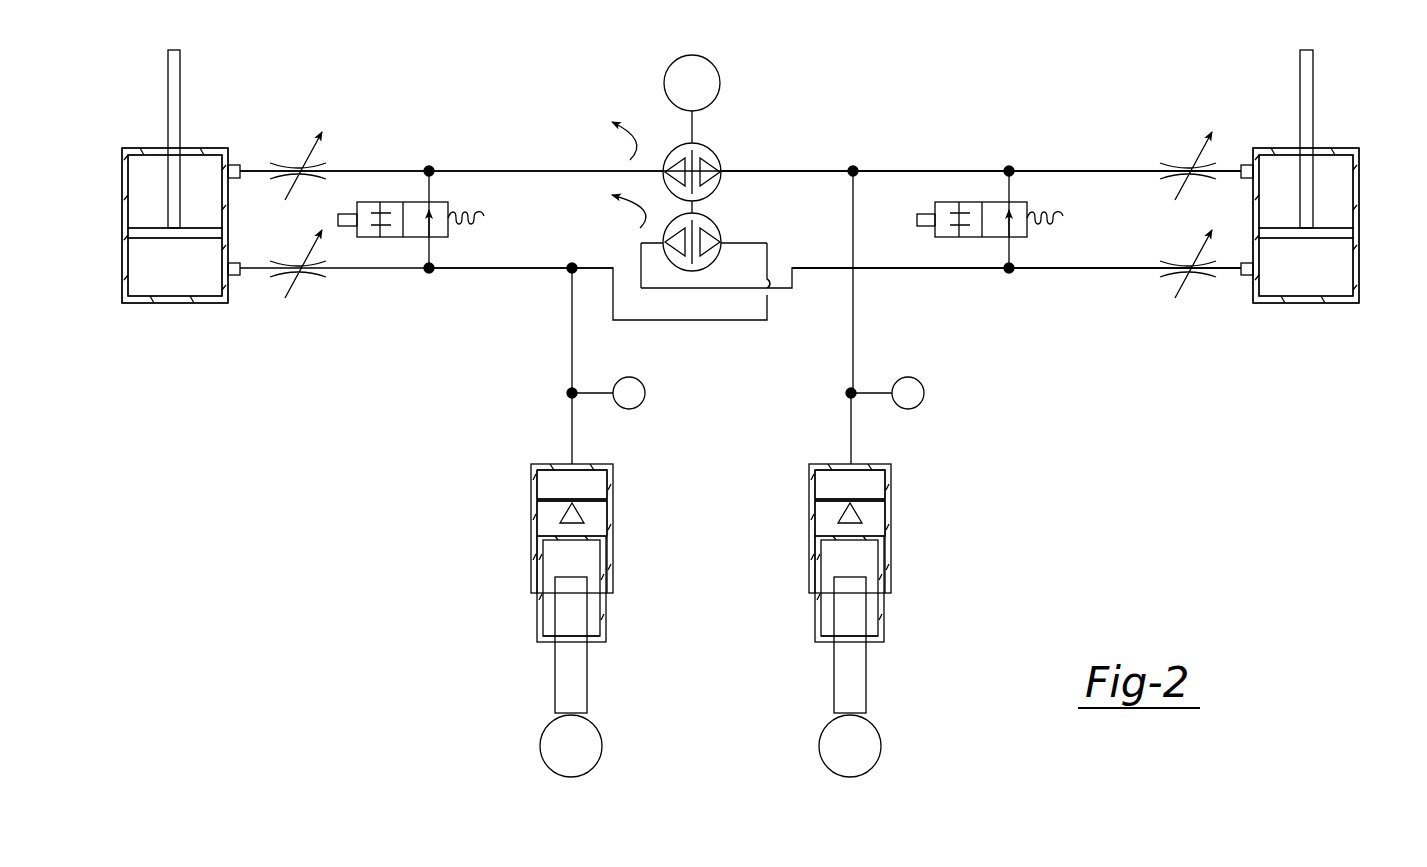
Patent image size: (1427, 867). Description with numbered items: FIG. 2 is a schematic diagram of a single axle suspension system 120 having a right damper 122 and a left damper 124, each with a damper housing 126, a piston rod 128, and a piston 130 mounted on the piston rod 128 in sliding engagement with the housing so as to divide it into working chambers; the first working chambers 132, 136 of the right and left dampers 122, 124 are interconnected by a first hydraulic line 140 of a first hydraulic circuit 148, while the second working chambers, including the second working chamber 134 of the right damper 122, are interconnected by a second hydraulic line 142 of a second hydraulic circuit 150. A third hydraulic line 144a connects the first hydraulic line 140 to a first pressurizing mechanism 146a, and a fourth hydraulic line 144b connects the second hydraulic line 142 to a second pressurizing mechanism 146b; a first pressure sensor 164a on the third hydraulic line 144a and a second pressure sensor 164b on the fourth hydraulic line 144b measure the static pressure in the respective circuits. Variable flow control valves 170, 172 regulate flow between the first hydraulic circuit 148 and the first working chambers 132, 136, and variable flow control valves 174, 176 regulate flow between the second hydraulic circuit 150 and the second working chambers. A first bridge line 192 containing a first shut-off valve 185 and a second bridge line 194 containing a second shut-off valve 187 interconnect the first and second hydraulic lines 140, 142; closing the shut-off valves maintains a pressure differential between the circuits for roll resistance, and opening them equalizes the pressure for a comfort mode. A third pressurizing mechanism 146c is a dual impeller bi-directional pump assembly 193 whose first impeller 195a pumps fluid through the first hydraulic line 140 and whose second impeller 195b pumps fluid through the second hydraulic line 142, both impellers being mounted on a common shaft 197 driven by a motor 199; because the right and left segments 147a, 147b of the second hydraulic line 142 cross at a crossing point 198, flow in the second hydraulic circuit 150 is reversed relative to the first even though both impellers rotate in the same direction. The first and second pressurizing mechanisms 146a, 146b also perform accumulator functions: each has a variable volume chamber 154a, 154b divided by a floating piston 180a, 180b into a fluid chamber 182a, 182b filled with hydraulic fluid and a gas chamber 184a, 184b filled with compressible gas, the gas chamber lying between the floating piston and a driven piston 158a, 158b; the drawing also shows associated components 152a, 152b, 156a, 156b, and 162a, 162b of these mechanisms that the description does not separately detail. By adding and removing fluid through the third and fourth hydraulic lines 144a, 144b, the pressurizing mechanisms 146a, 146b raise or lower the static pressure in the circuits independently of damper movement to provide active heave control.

The single axle suspension system 120 is at (268, 507).
The right damper 122 is at (1350, 135).
The left damper 124 is at (132, 135).
The damper housing 126 is at (128, 270).
The piston rod 128 is at (168, 55).
The piston 130 is at (140, 236).
The first working chamber 132 is at (1340, 193).
The second working chamber 134 is at (142, 295).
The first working chamber 136 is at (140, 193).
The first hydraulic line 140 is at (892, 170).
The second hydraulic line 142 is at (1051, 270).
The third hydraulic line 144a is at (848, 428).
The fourth hydraulic line 144b is at (572, 337).
The first pressurizing mechanism 146a is at (854, 602).
The second pressurizing mechanism 146b is at (571, 597).
The third pressurizing mechanism 146c is at (744, 150).
The right segment 147a is at (818, 266).
The left segment 147b is at (522, 266).
The first hydraulic circuit 148 is at (833, 165).
The second hydraulic circuit 150 is at (950, 273).
The accumulator piston rod 152a is at (858, 690).
The accumulator piston rod 152b is at (562, 690).
The variable volume chamber 154a is at (803, 466).
The variable volume chamber 154b is at (619, 466).
The accumulator housing 156a is at (890, 580).
The accumulator housing 156b is at (532, 580).
The driven piston 158a is at (884, 632).
The driven piston 158b is at (538, 632).
The weight 162a is at (868, 752).
The weight 162b is at (556, 752).
The first pressure sensor 164a is at (924, 395).
The second pressure sensor 164b is at (632, 383).
The first variable flow control valve 170 is at (1172, 166).
The second variable flow control valve 172 is at (282, 166).
The third variable flow control valve 174 is at (1210, 278).
The fourth variable flow control valve 176 is at (278, 278).
The floating piston 180a is at (870, 500).
The floating piston 180b is at (550, 500).
The fluid chamber 182a is at (868, 475).
The fluid chamber 182b is at (552, 475).
The gas chamber 184a is at (875, 520).
The gas chamber 184b is at (545, 520).
The first shut-off valve 185 is at (975, 202).
The second shut-off valve 187 is at (393, 202).
The first bridge line 192 is at (1010, 188).
The dual impeller bi-directional pump assembly 193 is at (663, 198).
The second bridge line 194 is at (432, 188).
The first impeller 195a is at (712, 154).
The second impeller 195b is at (712, 222).
The common shaft 197 is at (684, 128).
The crossing point 198 is at (771, 293).
The motor 199 is at (700, 68).